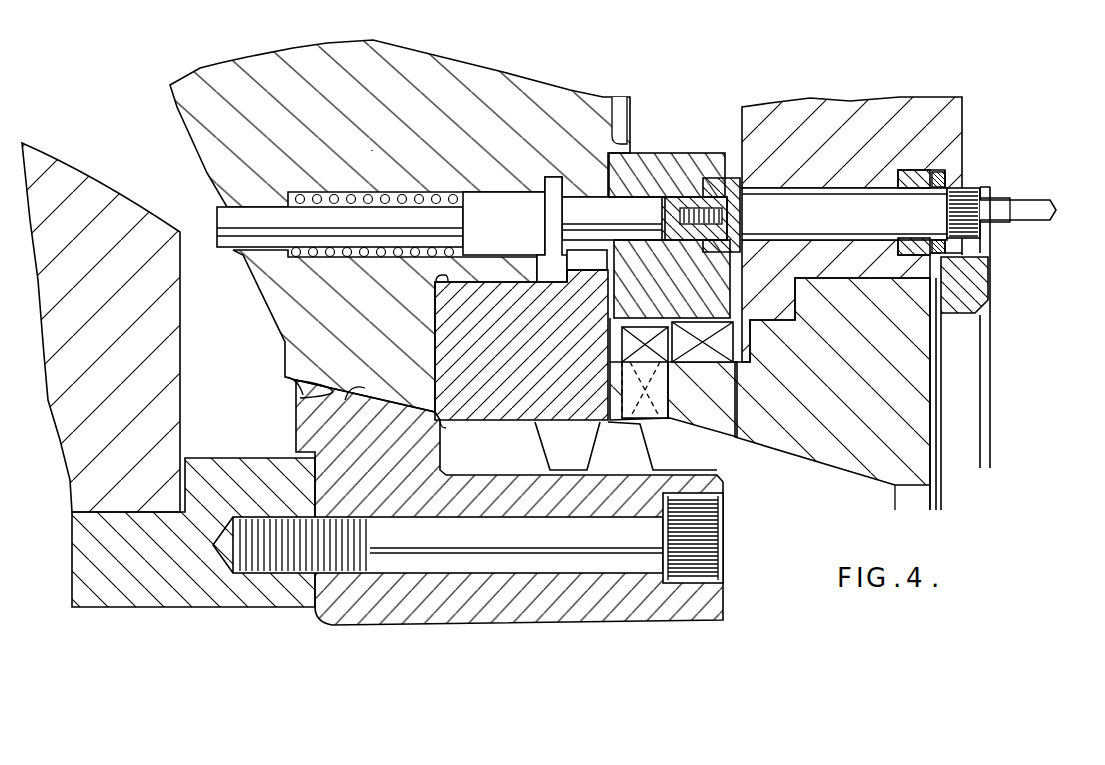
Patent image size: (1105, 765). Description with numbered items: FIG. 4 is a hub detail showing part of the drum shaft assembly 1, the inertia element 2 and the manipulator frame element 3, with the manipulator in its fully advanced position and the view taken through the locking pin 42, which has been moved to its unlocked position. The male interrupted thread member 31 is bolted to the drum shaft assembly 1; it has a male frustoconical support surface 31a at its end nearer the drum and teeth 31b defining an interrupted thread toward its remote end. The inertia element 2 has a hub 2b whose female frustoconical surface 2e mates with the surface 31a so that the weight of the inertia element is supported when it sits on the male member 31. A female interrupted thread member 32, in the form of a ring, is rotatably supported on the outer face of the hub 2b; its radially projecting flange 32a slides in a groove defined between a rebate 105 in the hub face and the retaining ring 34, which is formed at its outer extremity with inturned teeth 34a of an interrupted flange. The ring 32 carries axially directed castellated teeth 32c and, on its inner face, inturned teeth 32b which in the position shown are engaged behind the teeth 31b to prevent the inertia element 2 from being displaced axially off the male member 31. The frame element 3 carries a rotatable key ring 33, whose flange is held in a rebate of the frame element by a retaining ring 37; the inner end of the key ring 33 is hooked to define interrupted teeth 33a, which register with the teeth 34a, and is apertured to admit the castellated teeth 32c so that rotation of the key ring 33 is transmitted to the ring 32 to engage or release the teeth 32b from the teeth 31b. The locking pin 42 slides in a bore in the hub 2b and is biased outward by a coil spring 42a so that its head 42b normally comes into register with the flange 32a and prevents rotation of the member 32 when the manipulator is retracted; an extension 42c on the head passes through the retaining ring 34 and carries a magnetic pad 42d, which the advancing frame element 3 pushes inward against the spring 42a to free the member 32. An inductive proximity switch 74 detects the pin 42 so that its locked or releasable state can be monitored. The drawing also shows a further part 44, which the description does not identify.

The drum shaft assembly 1 is at (95, 180).
The inertia element 2 is at (400, 218).
The hub 2b is at (386, 151).
The female frustoconical surface 2e is at (283, 351).
The manipulator frame element 3 is at (823, 128).
The male interrupted thread member 31 is at (468, 502).
The male frustoconical support surface 31a is at (300, 402).
The teeth 31b is at (645, 469).
The female interrupted thread member 32 is at (498, 366).
The radially projecting flange 32a is at (590, 263).
The inturned teeth 32b is at (553, 458).
The axially directed castellated teeth 32c is at (647, 420).
The key ring 33 is at (910, 368).
The interrupted teeth 33a is at (610, 345).
The retaining ring 34 is at (677, 177).
The inturned teeth 34a is at (728, 420).
The retaining ring 37 is at (970, 290).
The locking pin 42 is at (509, 226).
The coil spring 42a is at (393, 258).
The head 42b is at (552, 183).
The extension 42c is at (648, 207).
The magnetic pad 42d is at (737, 178).
The bearing 44 is at (915, 170).
The inductive proximity switch 74 is at (1003, 200).
The rebate 105 is at (583, 250).